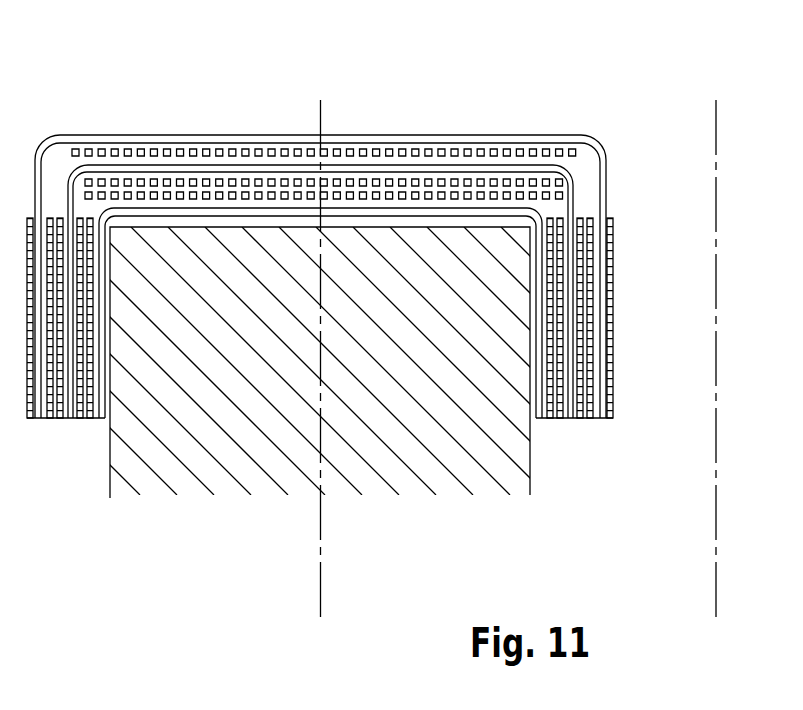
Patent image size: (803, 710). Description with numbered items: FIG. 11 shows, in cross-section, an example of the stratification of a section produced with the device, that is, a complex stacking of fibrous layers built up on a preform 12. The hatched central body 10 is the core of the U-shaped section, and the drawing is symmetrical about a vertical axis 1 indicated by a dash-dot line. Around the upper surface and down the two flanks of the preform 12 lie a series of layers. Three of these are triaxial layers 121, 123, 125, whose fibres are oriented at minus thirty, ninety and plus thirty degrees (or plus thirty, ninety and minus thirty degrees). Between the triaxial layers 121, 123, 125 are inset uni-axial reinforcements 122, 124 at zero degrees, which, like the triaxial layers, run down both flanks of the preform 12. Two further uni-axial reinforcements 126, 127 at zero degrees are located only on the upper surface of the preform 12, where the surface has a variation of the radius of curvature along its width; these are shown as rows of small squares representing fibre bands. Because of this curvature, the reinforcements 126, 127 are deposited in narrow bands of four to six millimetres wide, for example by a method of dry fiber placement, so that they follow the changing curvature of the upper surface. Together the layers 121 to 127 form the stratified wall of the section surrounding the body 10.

The vessel assembly 1 is at (715, 122).
The vessel body 10 is at (112, 453).
The preform 12 is at (617, 425).
The triaxial layer 121 is at (548, 220).
The uni-axial reinforcement 122 is at (563, 220).
The triaxial layer 123 is at (580, 252).
The uni-axial reinforcement 124 is at (590, 275).
The triaxial layer 125 is at (610, 303).
The uni-axial reinforcement 126 is at (268, 180).
The uni-axial reinforcement 127 is at (410, 155).